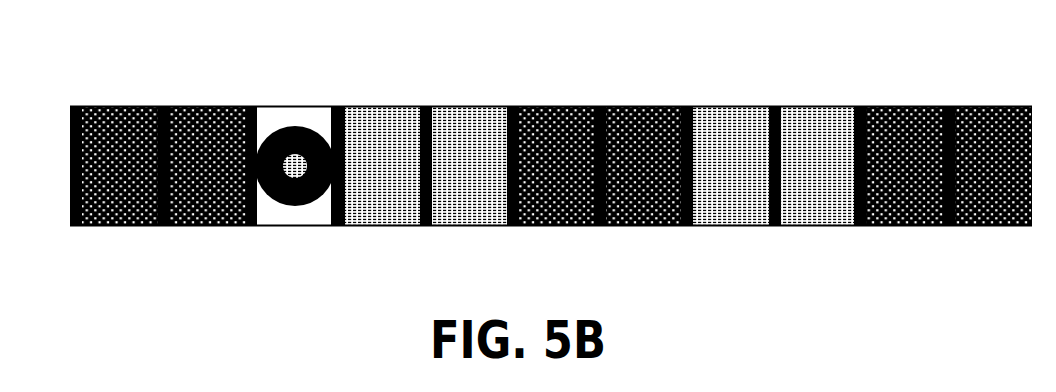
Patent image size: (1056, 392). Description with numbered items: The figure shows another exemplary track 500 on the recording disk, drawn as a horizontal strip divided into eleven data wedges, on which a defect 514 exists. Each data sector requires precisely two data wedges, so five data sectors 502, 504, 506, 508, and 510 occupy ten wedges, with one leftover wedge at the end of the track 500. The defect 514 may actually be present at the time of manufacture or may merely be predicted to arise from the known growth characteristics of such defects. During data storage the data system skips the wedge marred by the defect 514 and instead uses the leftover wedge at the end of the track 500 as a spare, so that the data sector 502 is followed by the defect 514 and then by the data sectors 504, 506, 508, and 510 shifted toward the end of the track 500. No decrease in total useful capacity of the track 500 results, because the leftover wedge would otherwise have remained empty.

The track 500 is at (542, 171).
The data sector 502 is at (73, 82).
The defect 514 is at (327, 82).
The data sector 504 is at (336, 82).
The data sector 506 is at (510, 82).
The data sector 508 is at (685, 82).
The data sector 510 is at (858, 82).